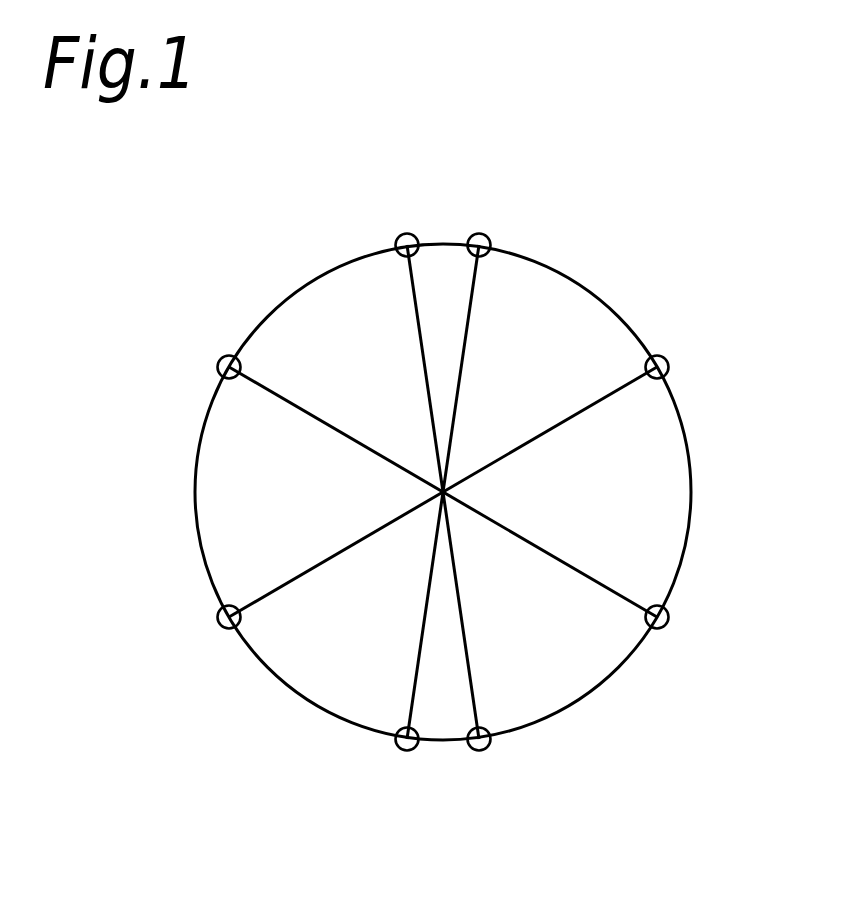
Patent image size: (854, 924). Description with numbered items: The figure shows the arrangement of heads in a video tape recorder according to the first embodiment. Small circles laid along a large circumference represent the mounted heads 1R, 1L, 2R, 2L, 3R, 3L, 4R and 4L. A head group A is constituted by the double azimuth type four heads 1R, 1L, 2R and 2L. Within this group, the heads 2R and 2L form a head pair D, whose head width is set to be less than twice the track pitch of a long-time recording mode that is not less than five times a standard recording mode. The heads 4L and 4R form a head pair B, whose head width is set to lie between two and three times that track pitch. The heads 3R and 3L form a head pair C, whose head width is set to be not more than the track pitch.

The head 1L is at (479, 233).
The head 1R is at (407, 751).
The head 2L is at (479, 751).
The head 2R is at (407, 233).
The head 3L is at (668, 622).
The head 3R is at (218, 363).
The head 4L is at (668, 362).
The head 4R is at (222, 628).